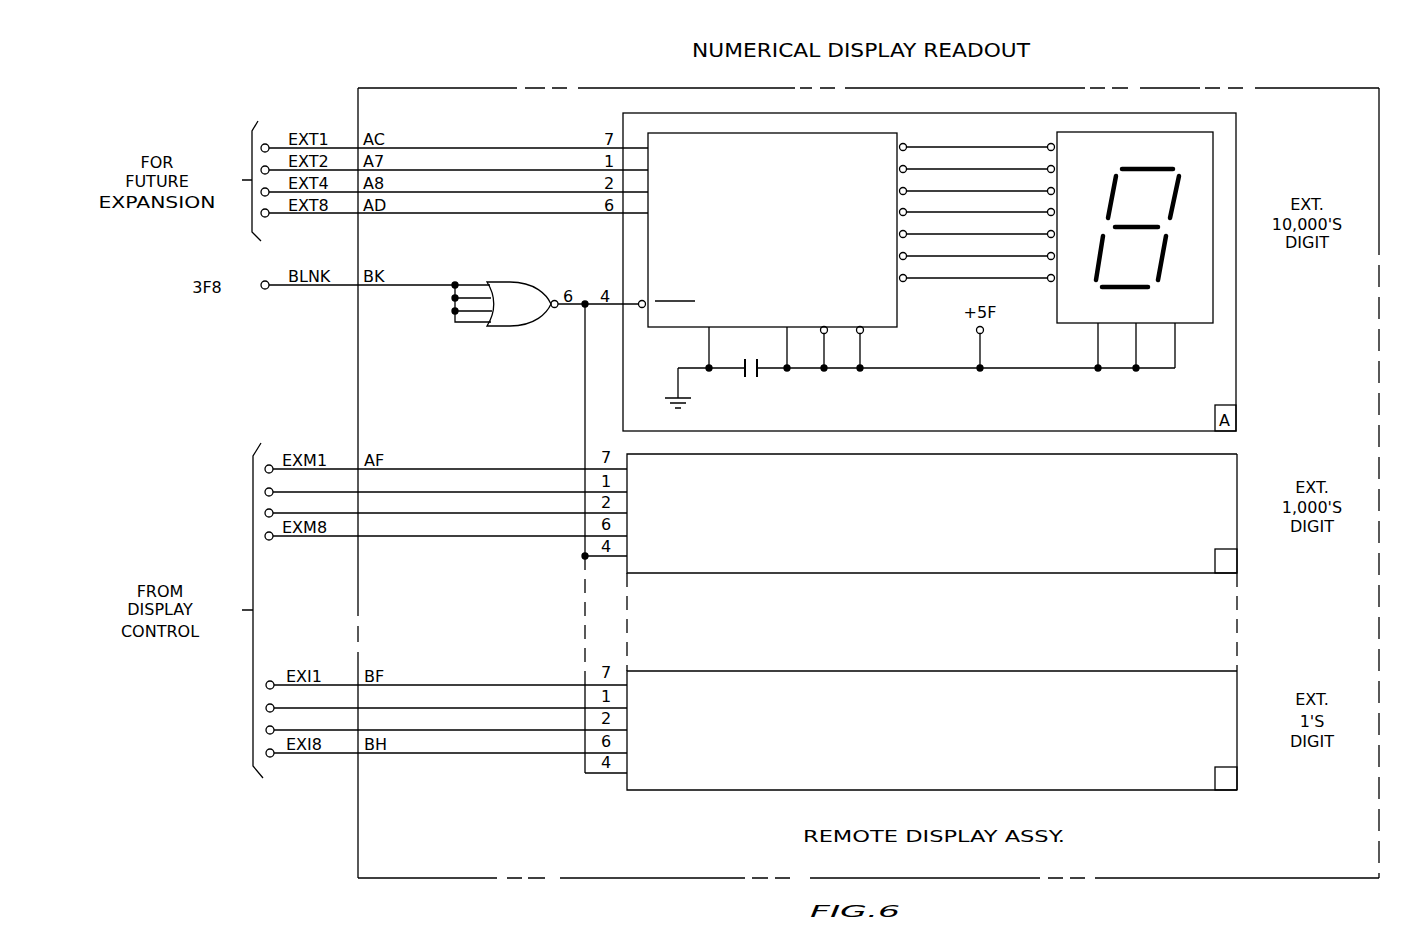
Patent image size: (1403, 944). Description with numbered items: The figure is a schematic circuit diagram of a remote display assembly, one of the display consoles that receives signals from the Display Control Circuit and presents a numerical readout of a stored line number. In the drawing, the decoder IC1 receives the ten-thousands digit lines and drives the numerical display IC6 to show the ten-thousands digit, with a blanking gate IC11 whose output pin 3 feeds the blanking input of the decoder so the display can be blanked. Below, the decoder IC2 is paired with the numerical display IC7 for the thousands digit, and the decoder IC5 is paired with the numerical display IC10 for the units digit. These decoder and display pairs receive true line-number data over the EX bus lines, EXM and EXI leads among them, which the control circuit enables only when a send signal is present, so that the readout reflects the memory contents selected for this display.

The seven segment decoder SSD5 IC1 is at (847, 242).
The numerical display ND5 IC6 is at (1131, 242).
The blanking gate G1 IC11 is at (527, 303).
The gate output pin 3 is at (539, 315).
The decoder SSD4 IC2 is at (932, 513).
The numerical display ND4 IC7 is at (1171, 513).
The decoder SSD1 IC5 is at (932, 730).
The numerical display ND1 IC10 is at (1170, 730).